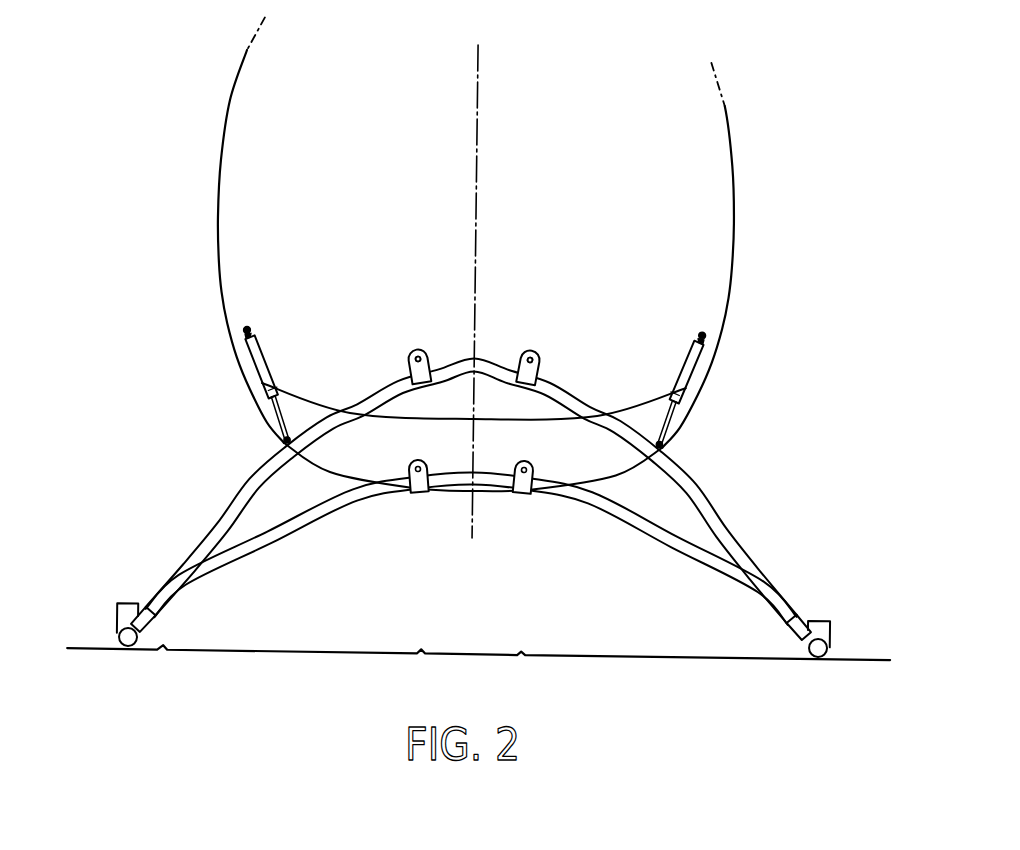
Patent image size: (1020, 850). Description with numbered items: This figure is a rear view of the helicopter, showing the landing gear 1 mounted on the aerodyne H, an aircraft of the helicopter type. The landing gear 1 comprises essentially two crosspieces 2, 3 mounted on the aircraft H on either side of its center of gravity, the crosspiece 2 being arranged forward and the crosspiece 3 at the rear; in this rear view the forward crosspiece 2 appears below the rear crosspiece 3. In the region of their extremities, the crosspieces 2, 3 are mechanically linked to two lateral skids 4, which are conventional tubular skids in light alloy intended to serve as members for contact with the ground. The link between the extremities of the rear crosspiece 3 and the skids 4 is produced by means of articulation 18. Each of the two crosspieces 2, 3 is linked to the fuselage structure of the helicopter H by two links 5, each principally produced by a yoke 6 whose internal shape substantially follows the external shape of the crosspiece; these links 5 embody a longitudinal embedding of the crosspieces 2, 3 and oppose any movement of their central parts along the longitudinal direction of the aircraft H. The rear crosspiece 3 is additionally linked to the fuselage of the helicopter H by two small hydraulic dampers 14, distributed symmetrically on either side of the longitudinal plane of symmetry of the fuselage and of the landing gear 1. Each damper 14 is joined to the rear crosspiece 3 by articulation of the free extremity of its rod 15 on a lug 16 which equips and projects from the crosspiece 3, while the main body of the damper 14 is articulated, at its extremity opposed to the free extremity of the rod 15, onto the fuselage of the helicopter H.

The landing gear 1 is at (626, 534).
The crosspiece 2 is at (263, 530).
The crosspiece 3 is at (238, 503).
The lateral skid 4 is at (120, 632).
The link 5 is at (403, 359).
The yoke 6 is at (433, 351).
The hydraulic damper 14 is at (256, 387).
The rod 15 is at (274, 384).
The lug 16 is at (283, 443).
The articulation 18 is at (127, 610).
The aerodyne H is at (599, 181).